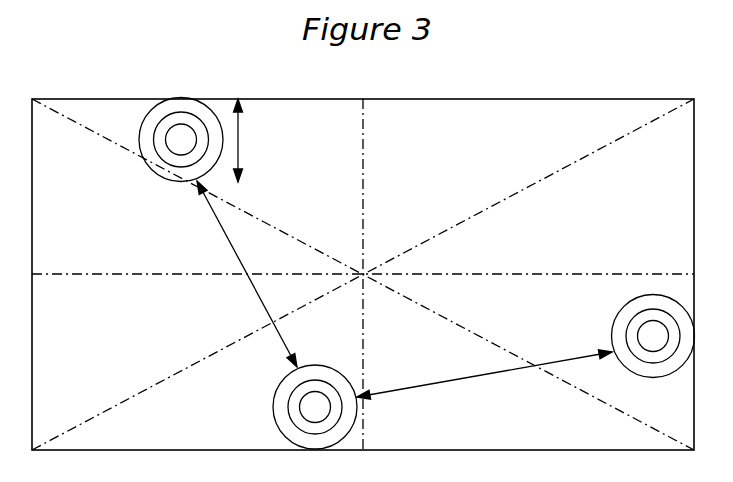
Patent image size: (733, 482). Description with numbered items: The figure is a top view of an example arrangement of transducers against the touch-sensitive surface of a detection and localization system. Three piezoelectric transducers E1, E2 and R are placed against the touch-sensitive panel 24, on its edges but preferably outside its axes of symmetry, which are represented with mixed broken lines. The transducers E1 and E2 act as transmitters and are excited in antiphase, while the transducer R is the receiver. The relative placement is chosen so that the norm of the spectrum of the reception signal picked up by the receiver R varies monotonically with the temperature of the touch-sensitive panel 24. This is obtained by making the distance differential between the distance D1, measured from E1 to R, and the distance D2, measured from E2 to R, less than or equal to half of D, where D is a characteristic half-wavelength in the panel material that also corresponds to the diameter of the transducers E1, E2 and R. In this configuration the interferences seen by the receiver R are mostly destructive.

The touch-sensitive panel 24 is at (500, 116).
The piezoelectric transducer (first transmitter) E1 is at (200, 100).
The piezoelectric transducer (second transmitter) E2 is at (613, 322).
The piezoelectric transducer (receiver) R is at (301, 366).
The characteristic half-wavelength D is at (248, 140).
The distance between E1 and R D1 is at (247, 274).
The distance between E2 and R D2 is at (484, 374).